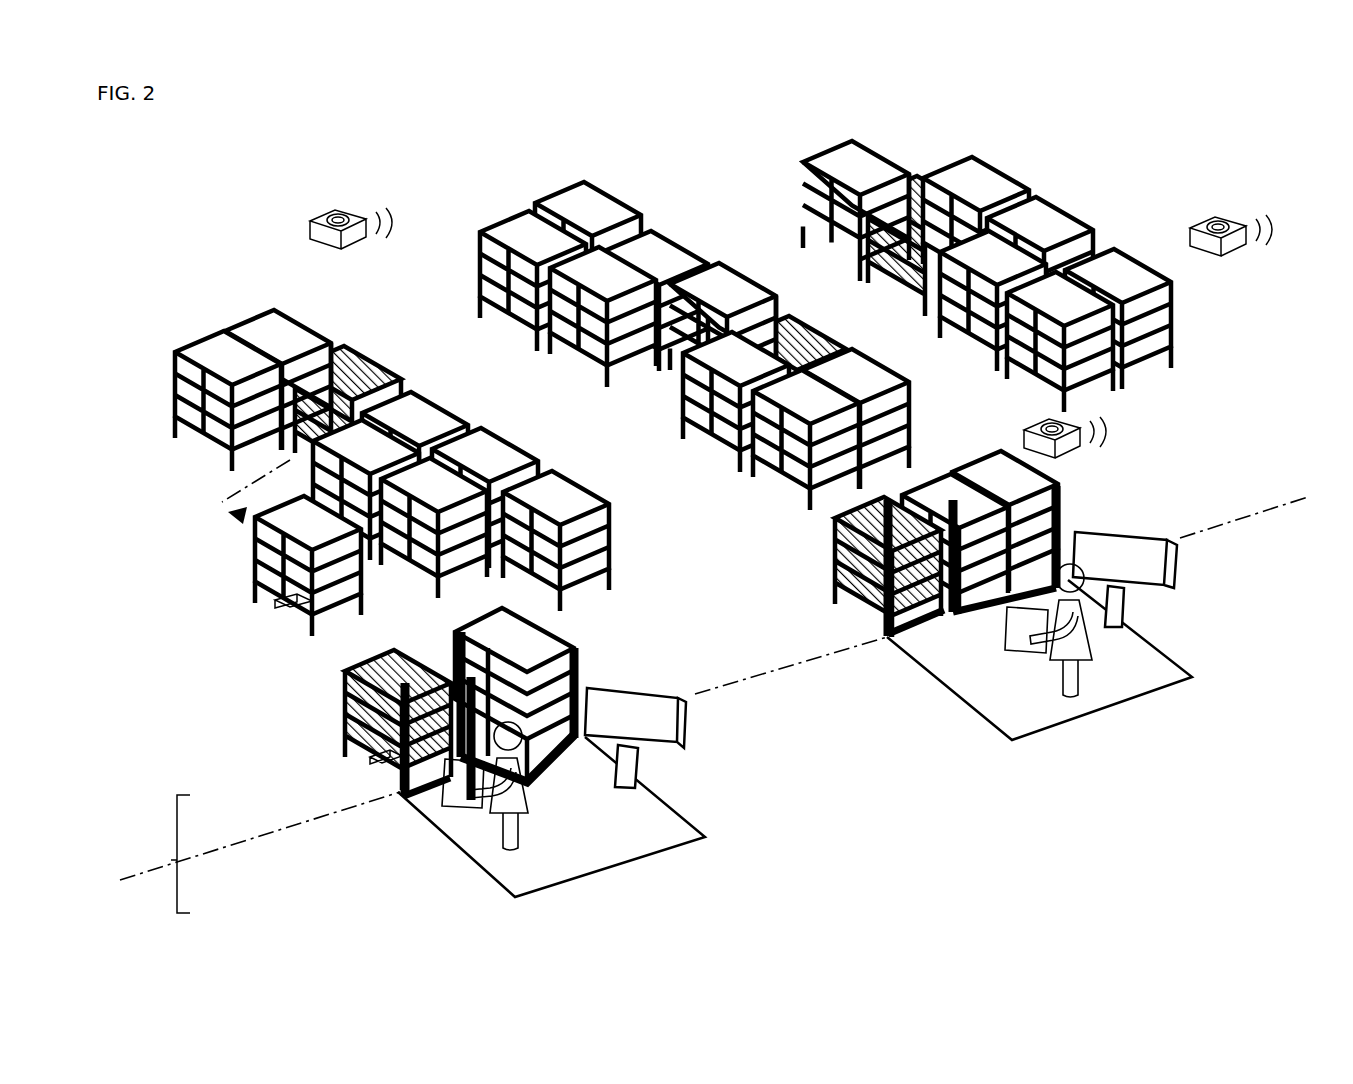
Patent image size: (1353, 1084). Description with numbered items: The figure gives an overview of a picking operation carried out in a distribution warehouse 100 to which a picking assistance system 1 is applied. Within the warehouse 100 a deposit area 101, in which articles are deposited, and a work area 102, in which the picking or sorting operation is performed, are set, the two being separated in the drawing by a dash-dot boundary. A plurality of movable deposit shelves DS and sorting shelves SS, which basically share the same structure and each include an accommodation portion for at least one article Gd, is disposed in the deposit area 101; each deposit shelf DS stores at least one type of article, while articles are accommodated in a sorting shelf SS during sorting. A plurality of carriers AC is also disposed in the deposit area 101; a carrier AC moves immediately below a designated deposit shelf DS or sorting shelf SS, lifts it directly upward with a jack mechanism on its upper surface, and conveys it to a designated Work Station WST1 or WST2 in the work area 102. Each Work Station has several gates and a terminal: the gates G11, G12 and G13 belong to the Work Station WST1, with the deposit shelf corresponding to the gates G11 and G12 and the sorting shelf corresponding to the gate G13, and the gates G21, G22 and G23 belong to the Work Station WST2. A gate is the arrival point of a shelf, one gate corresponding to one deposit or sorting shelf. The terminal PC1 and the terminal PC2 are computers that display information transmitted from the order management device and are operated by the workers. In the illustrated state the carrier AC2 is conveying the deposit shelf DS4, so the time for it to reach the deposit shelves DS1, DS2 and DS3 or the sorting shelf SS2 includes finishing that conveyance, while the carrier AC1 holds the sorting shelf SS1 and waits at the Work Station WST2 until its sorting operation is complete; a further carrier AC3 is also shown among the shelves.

The picking assistance system 1 is at (1105, 170).
The deposit shelf DS is at (478, 248).
The sorting shelf SS is at (360, 352).
The deposit shelf DS1 is at (532, 634).
The deposit shelf DS2 is at (932, 490).
The deposit shelf DS3 is at (614, 549).
The deposit shelf DS4 is at (255, 566).
The sorting shelf SS1 is at (344, 704).
The sorting shelf SS2 is at (834, 548).
The carrier AC is at (306, 231).
The carrier AC1 is at (376, 770).
The carrier AC2 is at (270, 612).
The carrier AC3 is at (1112, 447).
The gate G11 is at (1063, 492).
The gate G12 is at (978, 622).
The gate G13 is at (897, 640).
The gate G21 is at (582, 658).
The gate G22 is at (458, 660).
The gate G23 is at (412, 800).
The terminal PC1 is at (1182, 562).
The terminal PC2 is at (694, 729).
The Work Station WST1 is at (1092, 716).
The Work Station WST2 is at (620, 872).
The article Gd is at (466, 812).
The distribution warehouse 100 is at (177, 858).
The deposit area 101 is at (199, 854).
The work area 102 is at (209, 894).